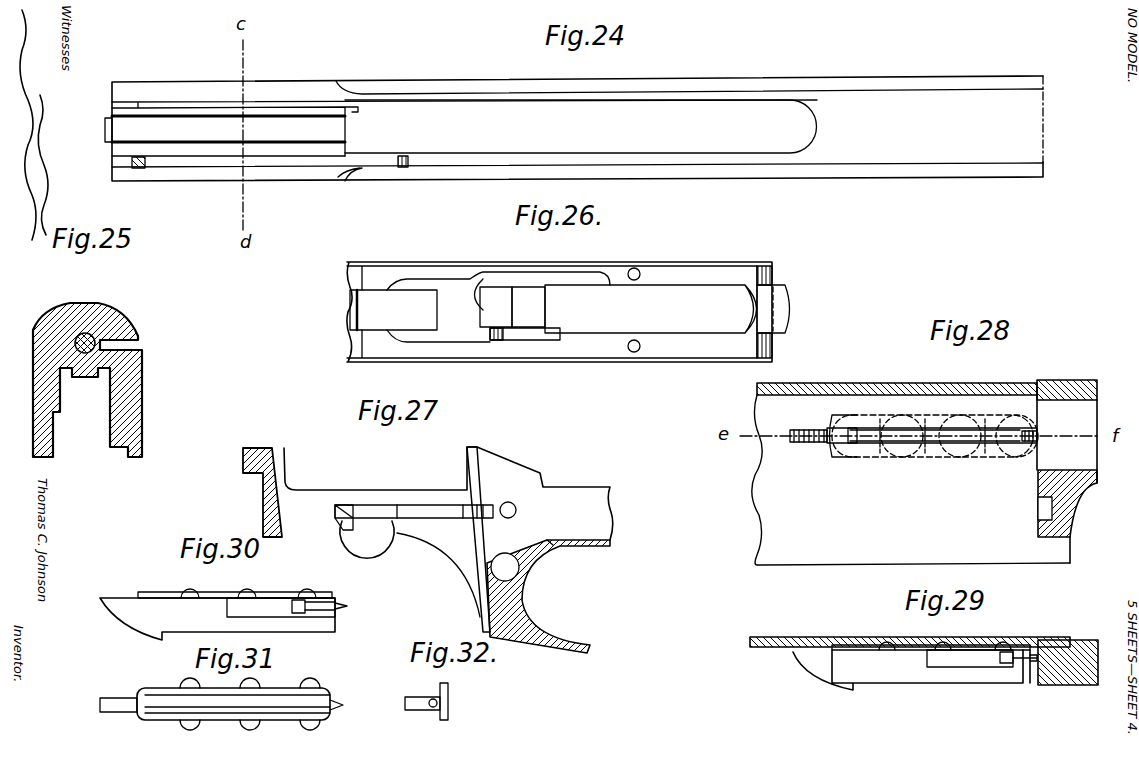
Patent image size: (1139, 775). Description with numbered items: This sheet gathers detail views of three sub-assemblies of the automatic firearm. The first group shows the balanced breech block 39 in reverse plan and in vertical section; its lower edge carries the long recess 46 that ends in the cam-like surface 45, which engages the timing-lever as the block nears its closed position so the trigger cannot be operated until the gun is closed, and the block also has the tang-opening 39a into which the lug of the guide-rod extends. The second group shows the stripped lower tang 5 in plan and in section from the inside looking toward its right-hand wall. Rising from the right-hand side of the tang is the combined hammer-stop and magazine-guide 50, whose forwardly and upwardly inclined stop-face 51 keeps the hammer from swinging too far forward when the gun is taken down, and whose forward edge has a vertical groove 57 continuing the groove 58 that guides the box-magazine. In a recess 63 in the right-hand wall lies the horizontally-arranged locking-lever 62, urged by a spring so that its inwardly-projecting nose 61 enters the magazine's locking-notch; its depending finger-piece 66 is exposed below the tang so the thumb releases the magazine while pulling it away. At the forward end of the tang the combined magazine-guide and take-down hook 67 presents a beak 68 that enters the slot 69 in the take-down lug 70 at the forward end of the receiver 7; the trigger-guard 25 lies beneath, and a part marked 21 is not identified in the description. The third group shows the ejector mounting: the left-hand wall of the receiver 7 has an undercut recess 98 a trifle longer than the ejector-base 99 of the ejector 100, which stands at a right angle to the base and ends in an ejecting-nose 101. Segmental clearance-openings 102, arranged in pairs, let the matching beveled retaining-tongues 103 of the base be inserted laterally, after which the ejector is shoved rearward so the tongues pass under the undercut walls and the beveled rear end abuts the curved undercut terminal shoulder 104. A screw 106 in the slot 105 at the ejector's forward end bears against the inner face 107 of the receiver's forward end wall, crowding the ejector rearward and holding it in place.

In FIG. 26, the tang 5 is at (663, 270).
In FIG. 27, the tang 5 is at (448, 493).
In FIG. 28, the receiver 7 is at (877, 385).
In FIG. 29, the receiver 7 is at (799, 637).
In FIG. 27, the pivot pin 21 is at (520, 572).
In FIG. 27, the trigger-guard 25 is at (568, 648).
In FIG. 24, the balanced breech block 39 is at (313, 82).
In FIG. 25, the balanced breech block 39 is at (112, 313).
In FIG. 24, the tang-opening 39a is at (464, 128).
In FIG. 24, the cam-like surface 45 is at (130, 163).
In FIG. 24, the recess 46 is at (309, 166).
In FIG. 25, the recess 46 is at (81, 412).
In FIG. 26, the combined hammer-stop and magazine-guide 50 is at (541, 344).
In FIG. 27, the combined hammer-stop and magazine-guide 50 is at (523, 479).
In FIG. 26, the stop-face 51 is at (520, 342).
In FIG. 27, the stop-face 51 is at (510, 460).
In FIG. 26, the vertical groove 57 is at (548, 328).
In FIG. 27, the vertical groove 57 is at (468, 470).
In FIG. 27, the groove 58 is at (478, 558).
In FIG. 27, the nose 61 is at (506, 517).
In FIG. 27, the locking-lever 62 is at (417, 505).
In FIG. 27, the recess 63 is at (343, 506).
In FIG. 27, the finger-piece 66 is at (367, 539).
In FIG. 26, the combined magazine-guide and take-down hook 67 is at (753, 312).
In FIG. 27, the combined magazine-guide and take-down hook 67 is at (264, 490).
In FIG. 26, the beak 68 is at (778, 317).
In FIG. 27, the beak 68 is at (243, 461).
In FIG. 28, the slot 69 is at (1038, 510).
In FIG. 28, the take-down lug 70 is at (1086, 496).
In FIG. 28, the recess 98 is at (866, 458).
In FIG. 29, the recess 98 is at (850, 651).
In FIG. 28, the ejector-base 99 is at (923, 451).
In FIG. 29, the ejector-base 99 is at (915, 653).
In FIG. 30, the ejector-base 99 is at (220, 592).
In FIG. 31, the ejector-base 99 is at (228, 722).
In FIG. 32, the ejector-base 99 is at (450, 692).
In FIG. 28, the ejector 100 is at (848, 445).
In FIG. 29, the ejector 100 is at (911, 670).
In FIG. 30, the ejector 100 is at (217, 619).
In FIG. 31, the ejector 100 is at (280, 702).
In FIG. 32, the ejector 100 is at (420, 697).
In FIG. 28, the ejecting-nose 101 is at (828, 451).
In FIG. 29, the ejecting-nose 101 is at (857, 692).
In FIG. 30, the ejecting-nose 101 is at (150, 639).
In FIG. 31, the ejecting-nose 101 is at (140, 718).
In FIG. 28, the segmental clearance-openings 102 is at (900, 460).
In FIG. 28, the retaining-tongues 103 is at (898, 418).
In FIG. 29, the retaining-tongues 103 is at (893, 644).
In FIG. 30, the retaining-tongues 103 is at (183, 590).
In FIG. 31, the retaining-tongues 103 is at (196, 725).
In FIG. 28, the terminal shoulder 104 is at (834, 432).
In FIG. 29, the terminal shoulder 104 is at (828, 645).
In FIG. 29, the slot 105 is at (980, 664).
In FIG. 30, the slot 105 is at (286, 617).
In FIG. 29, the screw 106 is at (1036, 666).
In FIG. 30, the screw 106 is at (348, 607).
In FIG. 31, the screw 106 is at (337, 709).
In FIG. 32, the screw 106 is at (430, 712).
In FIG. 28, the inner face 107 is at (1040, 450).
In FIG. 29, the inner face 107 is at (1052, 686).